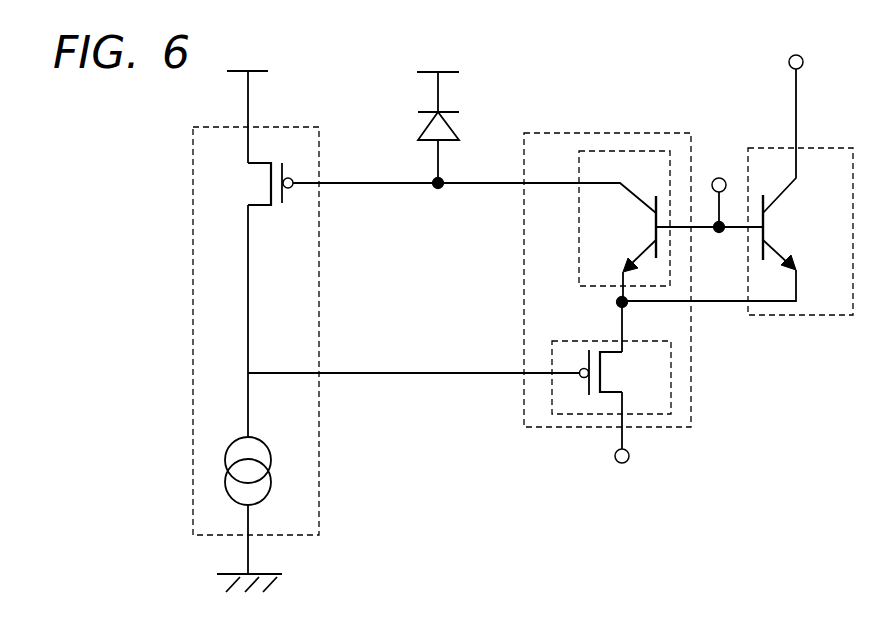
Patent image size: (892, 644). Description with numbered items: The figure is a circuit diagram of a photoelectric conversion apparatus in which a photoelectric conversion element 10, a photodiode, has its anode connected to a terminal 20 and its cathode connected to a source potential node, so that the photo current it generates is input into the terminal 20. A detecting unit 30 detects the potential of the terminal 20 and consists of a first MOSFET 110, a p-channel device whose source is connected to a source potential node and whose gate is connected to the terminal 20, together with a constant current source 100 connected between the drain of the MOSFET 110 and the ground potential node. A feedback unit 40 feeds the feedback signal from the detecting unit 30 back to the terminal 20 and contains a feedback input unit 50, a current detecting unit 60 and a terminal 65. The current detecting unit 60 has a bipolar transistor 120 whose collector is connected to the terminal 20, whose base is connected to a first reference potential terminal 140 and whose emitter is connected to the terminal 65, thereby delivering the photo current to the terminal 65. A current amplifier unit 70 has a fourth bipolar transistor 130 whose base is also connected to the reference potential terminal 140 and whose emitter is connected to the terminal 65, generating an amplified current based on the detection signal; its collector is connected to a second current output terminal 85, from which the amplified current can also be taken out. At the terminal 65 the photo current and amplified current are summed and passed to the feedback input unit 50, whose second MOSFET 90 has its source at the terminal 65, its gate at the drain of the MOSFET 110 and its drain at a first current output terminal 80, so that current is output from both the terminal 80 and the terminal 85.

The photoelectric conversion element 10 is at (455, 125).
The terminal 20 is at (439, 190).
The detecting unit 30 is at (322, 436).
The feedback unit 40 is at (552, 428).
The feedback input unit 50 is at (568, 340).
The current detecting unit 60 is at (578, 212).
The terminal 65 is at (628, 308).
The current amplifier unit 70 is at (796, 316).
The first current output terminal 80 is at (622, 463).
The second current output terminal 85 is at (788, 62).
The second MOSFET 90 is at (610, 373).
The constant current source 100 is at (260, 440).
The first MOSFET 110 is at (260, 183).
The bipolar transistor 120 is at (645, 227).
The fourth bipolar transistor 130 is at (775, 227).
The first reference potential terminal 140 is at (718, 178).